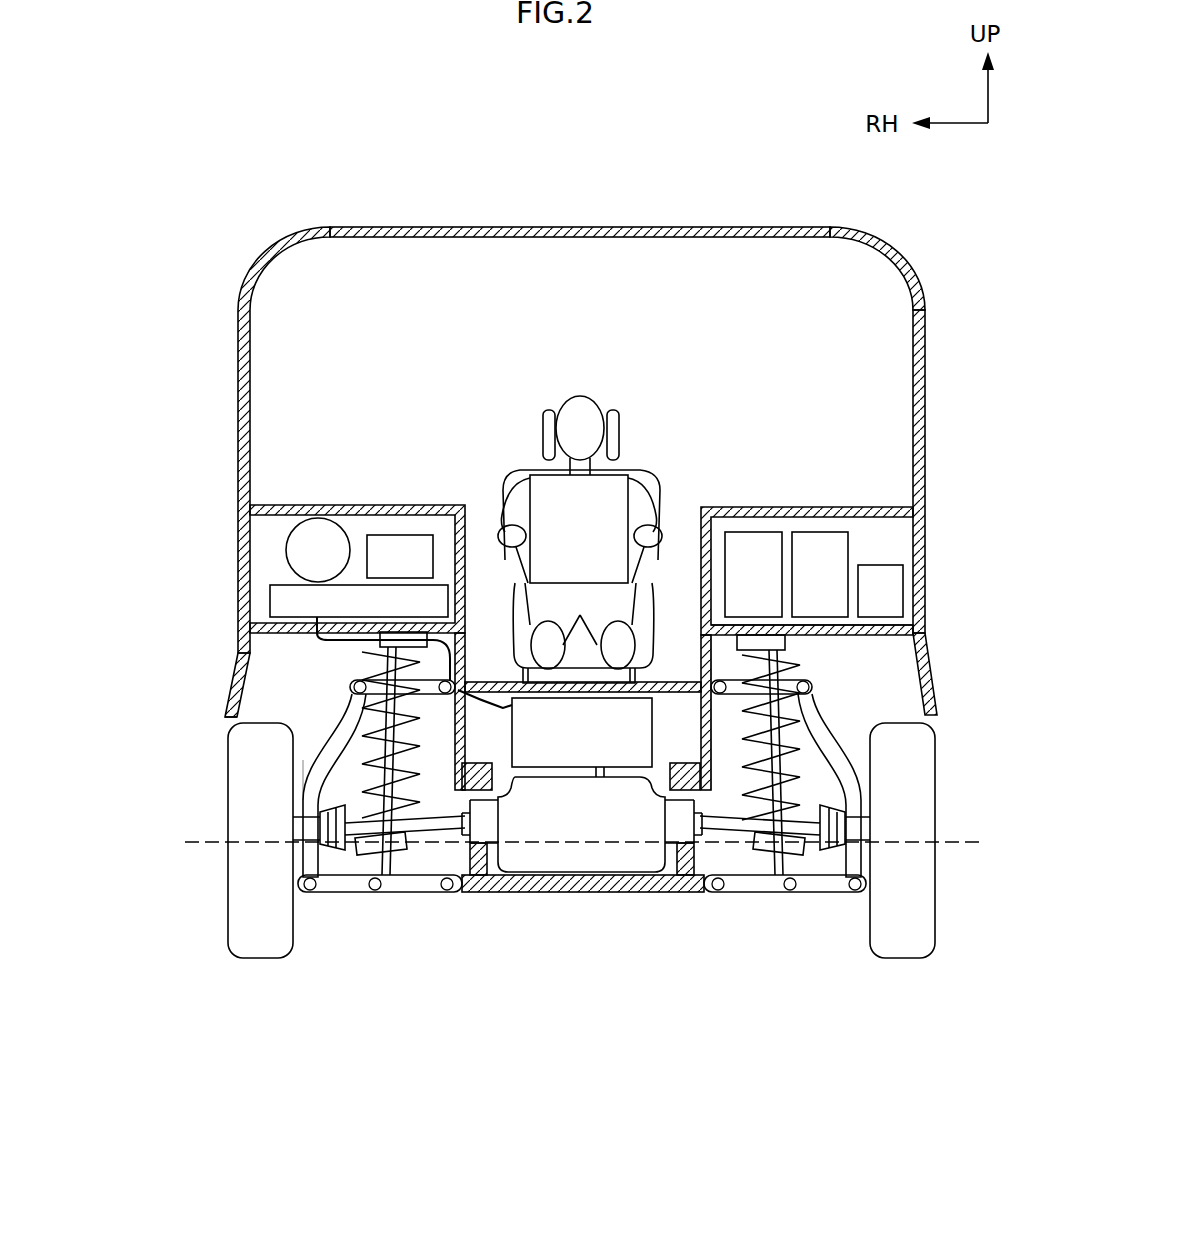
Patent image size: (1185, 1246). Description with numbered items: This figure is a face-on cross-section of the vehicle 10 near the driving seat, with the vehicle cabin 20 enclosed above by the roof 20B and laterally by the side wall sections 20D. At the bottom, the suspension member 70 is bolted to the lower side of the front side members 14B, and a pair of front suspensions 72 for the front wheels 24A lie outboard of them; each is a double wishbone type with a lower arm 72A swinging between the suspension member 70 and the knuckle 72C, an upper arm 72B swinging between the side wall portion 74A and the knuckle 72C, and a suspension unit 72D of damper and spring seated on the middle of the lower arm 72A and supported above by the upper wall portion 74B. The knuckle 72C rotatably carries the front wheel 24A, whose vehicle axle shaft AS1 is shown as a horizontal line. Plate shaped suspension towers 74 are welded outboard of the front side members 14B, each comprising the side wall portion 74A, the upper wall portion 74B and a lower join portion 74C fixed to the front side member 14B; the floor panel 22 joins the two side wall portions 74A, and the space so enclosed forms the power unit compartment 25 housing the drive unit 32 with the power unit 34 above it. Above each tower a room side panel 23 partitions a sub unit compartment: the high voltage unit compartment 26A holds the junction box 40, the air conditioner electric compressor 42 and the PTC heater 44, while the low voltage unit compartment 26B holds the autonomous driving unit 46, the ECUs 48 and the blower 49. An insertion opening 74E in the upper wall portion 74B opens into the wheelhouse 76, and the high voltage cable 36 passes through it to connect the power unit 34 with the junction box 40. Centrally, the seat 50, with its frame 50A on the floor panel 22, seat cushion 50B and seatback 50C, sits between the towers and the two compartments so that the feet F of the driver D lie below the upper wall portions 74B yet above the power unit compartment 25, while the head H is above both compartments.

The vehicle 10 is at (383, 187).
The vehicle cabin 20 is at (630, 395).
The roof 20B is at (545, 226).
The side wall section 20D is at (927, 345).
The floor panel 22 is at (704, 734).
The room side panel 23 is at (366, 504).
The front wheel 24A is at (255, 960).
The power unit compartment 25 is at (447, 893).
The high voltage unit compartment 26A is at (298, 509).
The low voltage unit compartment 26B is at (873, 477).
The drive unit 32 is at (541, 768).
The power unit 34 is at (537, 760).
The high voltage cable 36 is at (325, 642).
The junction box 40 is at (282, 600).
The air conditioner electric compressor 42 is at (300, 550).
The PTC heater 44 is at (407, 545).
The autonomous driving unit 46 is at (755, 560).
The ECU 48 is at (831, 545).
The blower 49 is at (868, 532).
The seat 50 is at (620, 496).
The frame 50A is at (656, 670).
The seat cushion 50B is at (648, 597).
The seatback 50C is at (642, 458).
The suspension member 70 is at (583, 852).
The front suspension 72 is at (568, 861).
The lower arm 72A is at (338, 893).
The upper arm 72B is at (580, 827).
The knuckle 72C is at (305, 880).
The suspension unit 72D is at (412, 870).
The suspension tower 74 is at (272, 630).
The side wall portion 74A is at (714, 777).
The upper wall portion 74B is at (881, 630).
The lower join portion 74C is at (707, 738).
The insertion opening 74E is at (240, 700).
The wheelhouse 76 is at (312, 734).
The front side member 14B is at (672, 795).
The vehicle axle shaft AS1 is at (960, 845).
The head H is at (578, 410).
The driver D is at (546, 500).
The feet F is at (518, 630).